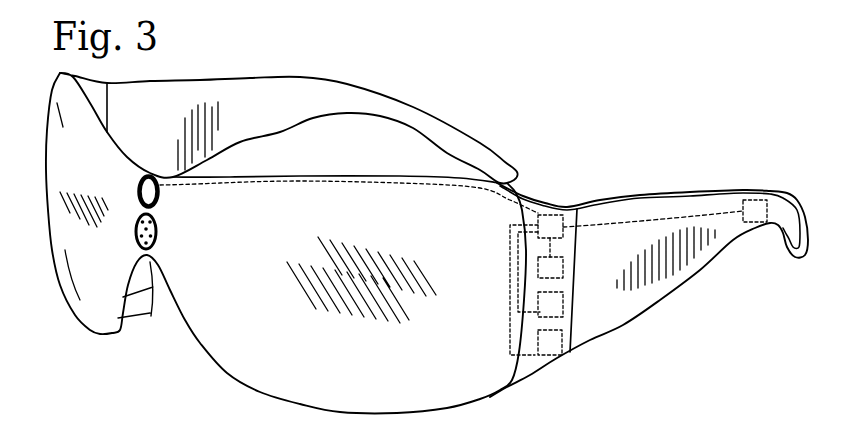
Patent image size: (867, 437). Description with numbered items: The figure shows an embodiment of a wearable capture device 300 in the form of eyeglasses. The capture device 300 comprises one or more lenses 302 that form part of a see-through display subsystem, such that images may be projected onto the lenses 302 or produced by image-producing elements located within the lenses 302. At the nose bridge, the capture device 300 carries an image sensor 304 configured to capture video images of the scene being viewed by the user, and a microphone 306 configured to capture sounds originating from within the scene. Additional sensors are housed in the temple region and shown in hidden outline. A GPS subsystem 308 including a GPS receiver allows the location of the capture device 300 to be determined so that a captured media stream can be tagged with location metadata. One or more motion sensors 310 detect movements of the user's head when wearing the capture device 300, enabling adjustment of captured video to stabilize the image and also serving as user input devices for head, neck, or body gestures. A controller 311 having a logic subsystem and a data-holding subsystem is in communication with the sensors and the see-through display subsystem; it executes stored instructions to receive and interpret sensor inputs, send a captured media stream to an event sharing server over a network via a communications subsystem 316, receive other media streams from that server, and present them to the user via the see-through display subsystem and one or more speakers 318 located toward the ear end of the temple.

The capture device 300 is at (508, 77).
The lenses 302 is at (360, 372).
The image sensor 304 is at (140, 186).
The microphone 306 is at (137, 239).
The GPS subsystem 308 is at (566, 263).
The motion sensors 310 is at (565, 302).
The controller 311 is at (559, 211).
The communications subsystem 316 is at (553, 356).
The speakers 318 is at (748, 198).